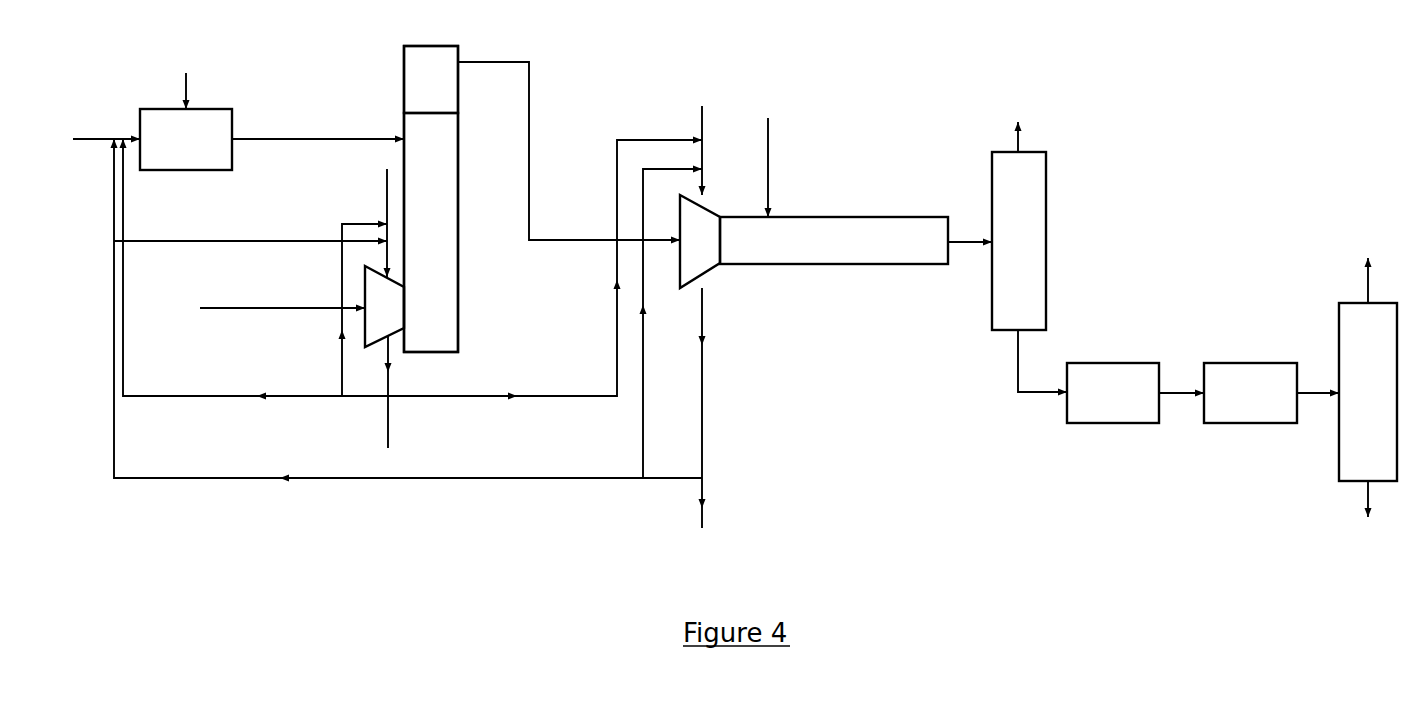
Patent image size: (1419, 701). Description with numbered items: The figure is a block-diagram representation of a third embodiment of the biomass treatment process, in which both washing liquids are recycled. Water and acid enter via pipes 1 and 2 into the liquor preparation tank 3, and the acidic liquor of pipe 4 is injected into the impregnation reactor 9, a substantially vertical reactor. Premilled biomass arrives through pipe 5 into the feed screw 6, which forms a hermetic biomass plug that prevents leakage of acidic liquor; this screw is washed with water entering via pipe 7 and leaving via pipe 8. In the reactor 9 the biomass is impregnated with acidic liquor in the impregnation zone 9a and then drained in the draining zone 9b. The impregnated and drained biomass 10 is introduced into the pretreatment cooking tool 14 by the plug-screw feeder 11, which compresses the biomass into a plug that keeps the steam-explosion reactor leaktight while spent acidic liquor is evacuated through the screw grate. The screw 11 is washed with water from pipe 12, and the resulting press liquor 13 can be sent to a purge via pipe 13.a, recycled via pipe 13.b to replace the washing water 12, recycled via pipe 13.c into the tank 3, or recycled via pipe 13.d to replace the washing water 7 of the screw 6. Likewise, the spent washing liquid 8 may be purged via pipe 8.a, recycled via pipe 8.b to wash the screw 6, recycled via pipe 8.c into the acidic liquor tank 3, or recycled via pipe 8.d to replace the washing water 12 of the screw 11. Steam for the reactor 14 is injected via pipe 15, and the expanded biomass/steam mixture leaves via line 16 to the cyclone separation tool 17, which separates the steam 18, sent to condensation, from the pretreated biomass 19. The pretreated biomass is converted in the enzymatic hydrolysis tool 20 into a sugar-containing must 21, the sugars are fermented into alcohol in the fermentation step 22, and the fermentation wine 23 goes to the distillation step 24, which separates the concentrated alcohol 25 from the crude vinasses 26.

The entry of water 1 is at (106, 126).
The entry of acid 2 is at (204, 91).
The liquor preparation tank 3 is at (186, 139).
The acidic liquor pipe 4 is at (318, 125).
The milled biomass 5 is at (282, 292).
The plug-screw feeder of the impregnation tool 6 is at (384, 306).
The washing water for the impregnation feed screw 7 is at (376, 223).
The washing liquid outlet of the impregnation feed screw 8 is at (374, 366).
The spent washing liquid to the purge 8.a is at (364, 422).
The recycled washing liquid for the impregnation screw 8.b is at (341, 310).
The washing liquid recycled to the liquor preparation tank 8.c is at (255, 268).
The recycled washing liquid for the pretreatment screw 8.d is at (545, 268).
The impregnation reactor 9 is at (443, 199).
The impregnation zone 9a is at (431, 232).
The draining zone 9b is at (431, 79).
The impregnated and drained biomass 10 is at (569, 151).
The plug-screw feeder of the pretreatment tool 11 is at (700, 241).
The washing water for the pretreatment feed screw 12 is at (725, 150).
The press liquor 13 is at (724, 383).
The press liquor to the purge 13.a is at (734, 504).
The press liquor recycling for the pretreatment screw 13.b is at (645, 323).
The press liquor recycling to the liquor preparation tank 13.c is at (380, 308).
The press liquor recycling for the impregnation screw 13.d is at (250, 225).
The pretreatment cooking tool 14 is at (834, 240).
The steam injection 15 is at (793, 167).
The pretreated biomass and steam line 16 is at (970, 223).
The separation tool 17 is at (1019, 241).
The steam to condensation 18 is at (1040, 137).
The pretreated biomass 19 is at (1023, 361).
The enzymatic hydrolysis tool 20 is at (1113, 393).
The enzymatic hydrolysis must 21 is at (1181, 415).
The alcoholic fermentation step 22 is at (1250, 393).
The fermentation wine 23 is at (1318, 379).
The distillation step 24 is at (1368, 392).
The concentrated alcohol 25 is at (1390, 280).
The crude vinasses 26 is at (1390, 502).